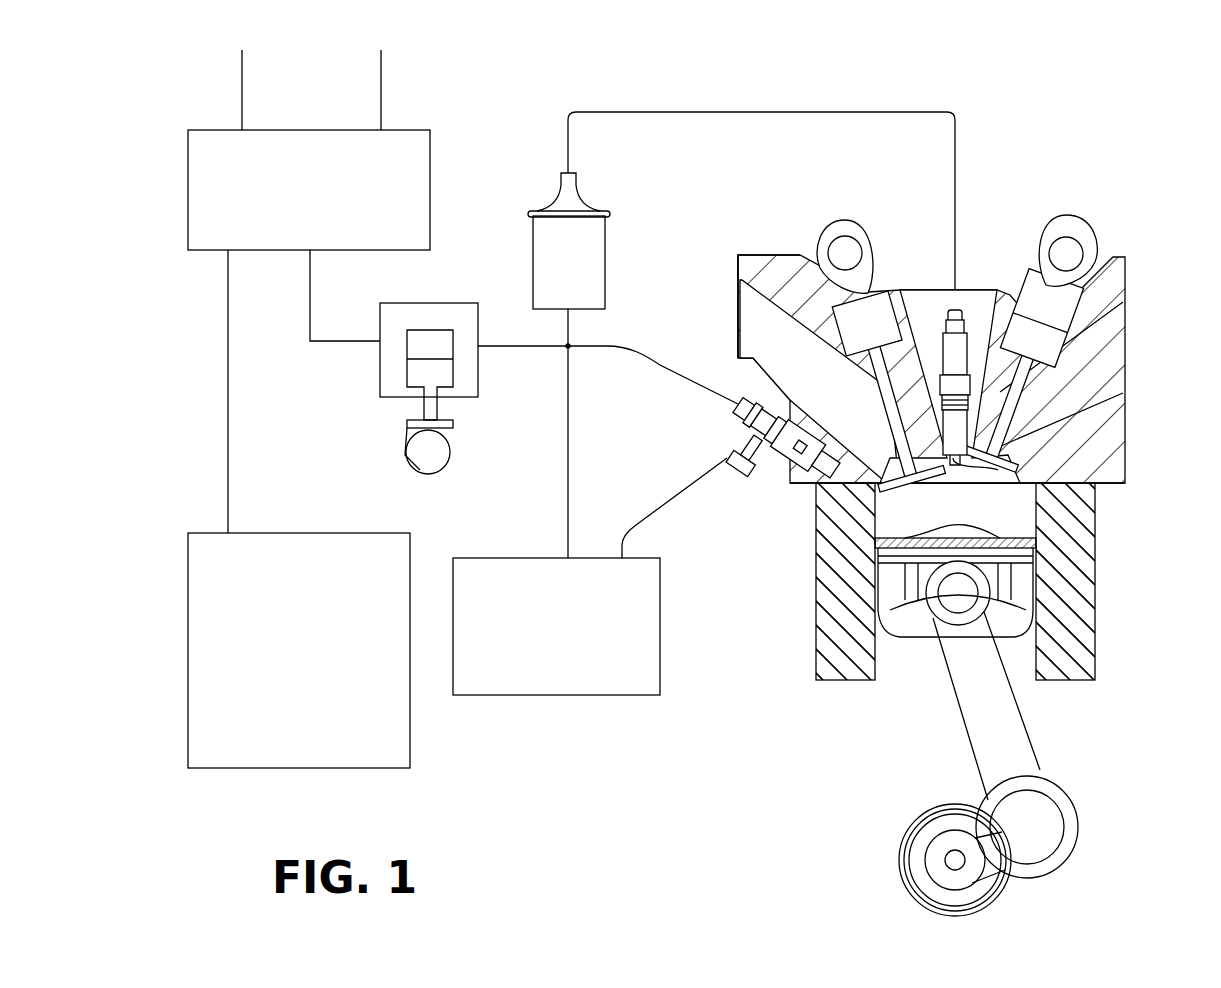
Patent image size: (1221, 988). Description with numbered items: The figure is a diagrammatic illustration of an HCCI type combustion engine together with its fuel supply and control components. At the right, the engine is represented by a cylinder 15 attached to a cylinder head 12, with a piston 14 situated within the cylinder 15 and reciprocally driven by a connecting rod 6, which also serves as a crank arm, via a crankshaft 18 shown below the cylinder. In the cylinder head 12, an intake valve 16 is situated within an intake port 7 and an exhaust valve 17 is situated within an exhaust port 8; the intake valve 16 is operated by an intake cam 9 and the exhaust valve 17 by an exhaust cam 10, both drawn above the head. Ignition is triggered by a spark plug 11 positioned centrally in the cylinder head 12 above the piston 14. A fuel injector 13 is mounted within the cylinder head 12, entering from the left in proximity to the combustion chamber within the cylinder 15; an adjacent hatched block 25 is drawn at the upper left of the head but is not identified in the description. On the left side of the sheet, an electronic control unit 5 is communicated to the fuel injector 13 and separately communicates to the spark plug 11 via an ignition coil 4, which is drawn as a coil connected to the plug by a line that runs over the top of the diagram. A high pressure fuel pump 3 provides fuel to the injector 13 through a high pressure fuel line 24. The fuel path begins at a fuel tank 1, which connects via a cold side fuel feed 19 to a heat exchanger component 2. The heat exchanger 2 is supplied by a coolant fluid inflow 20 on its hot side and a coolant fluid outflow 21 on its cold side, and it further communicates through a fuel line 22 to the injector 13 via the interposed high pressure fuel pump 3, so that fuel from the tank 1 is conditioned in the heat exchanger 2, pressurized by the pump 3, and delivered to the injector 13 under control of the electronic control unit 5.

The fuel tank 1 is at (308, 662).
The heat exchanger component 2 is at (316, 201).
The high pressure fuel pump 3 is at (468, 356).
The ignition coil 4 is at (575, 273).
The electronic control unit 5 is at (563, 640).
The connecting rod 6 is at (998, 712).
The intake port 7 is at (747, 310).
The exhaust port 8 is at (1118, 398).
The intake cam 9 is at (845, 233).
The exhaust cam 10 is at (1072, 222).
The spark plug 11 is at (970, 320).
The cylinder head 12 is at (1118, 360).
The fuel injector 13 is at (800, 452).
The piston 14 is at (1043, 583).
The cylinder 15 is at (840, 590).
The intake valve 16 is at (900, 448).
The exhaust valve 17 is at (1013, 453).
The crankshaft 18 is at (1040, 838).
The cold side fuel feed 19 is at (228, 458).
The coolant fluid inflow 20 is at (242, 95).
The coolant fluid outflow 21 is at (381, 95).
The fuel line 22 is at (310, 310).
The high pressure fuel line 24 is at (660, 372).
The cylinder head block 25 is at (770, 250).